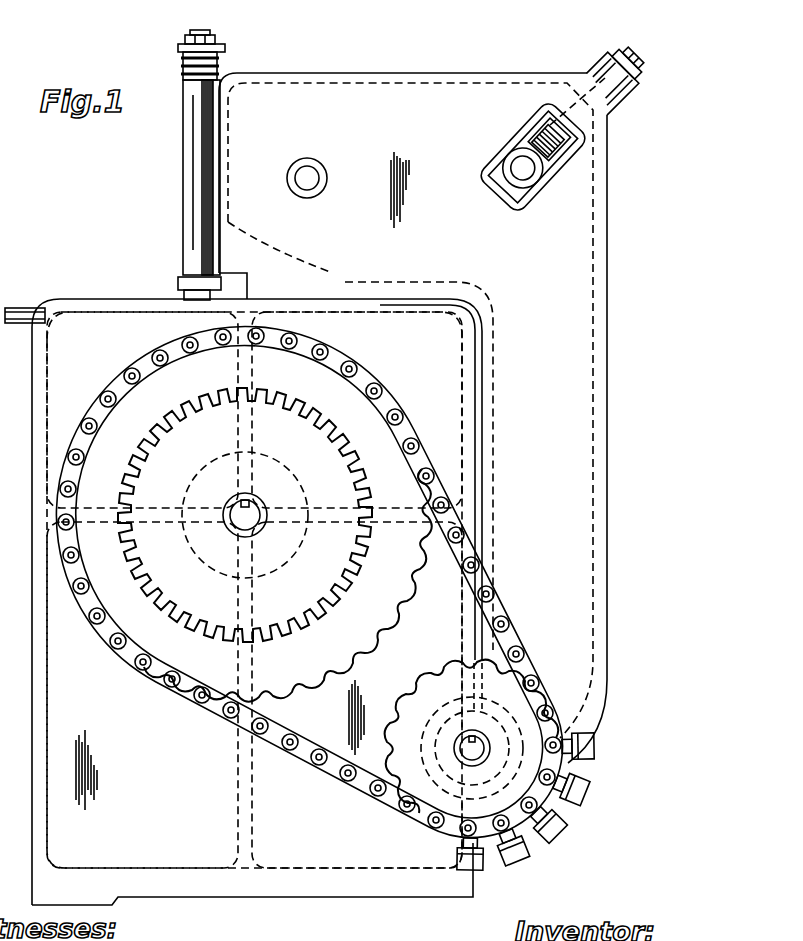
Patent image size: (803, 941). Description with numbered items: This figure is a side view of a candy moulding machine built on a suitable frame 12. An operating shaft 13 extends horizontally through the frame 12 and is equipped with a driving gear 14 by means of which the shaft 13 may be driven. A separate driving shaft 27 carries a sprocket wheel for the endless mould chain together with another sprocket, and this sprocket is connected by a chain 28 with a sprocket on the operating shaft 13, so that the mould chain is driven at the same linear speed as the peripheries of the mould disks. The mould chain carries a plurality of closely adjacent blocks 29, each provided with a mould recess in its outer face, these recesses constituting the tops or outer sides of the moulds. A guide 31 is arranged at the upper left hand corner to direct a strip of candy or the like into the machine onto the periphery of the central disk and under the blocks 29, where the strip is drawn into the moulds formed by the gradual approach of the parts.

The frame 12 is at (342, 472).
The operating shaft 13 is at (251, 516).
The driving gear 14 is at (245, 515).
The driving shaft 27 is at (478, 752).
The chain 28 is at (489, 577).
The blocks 29 is at (580, 790).
The guide 31 is at (25, 313).